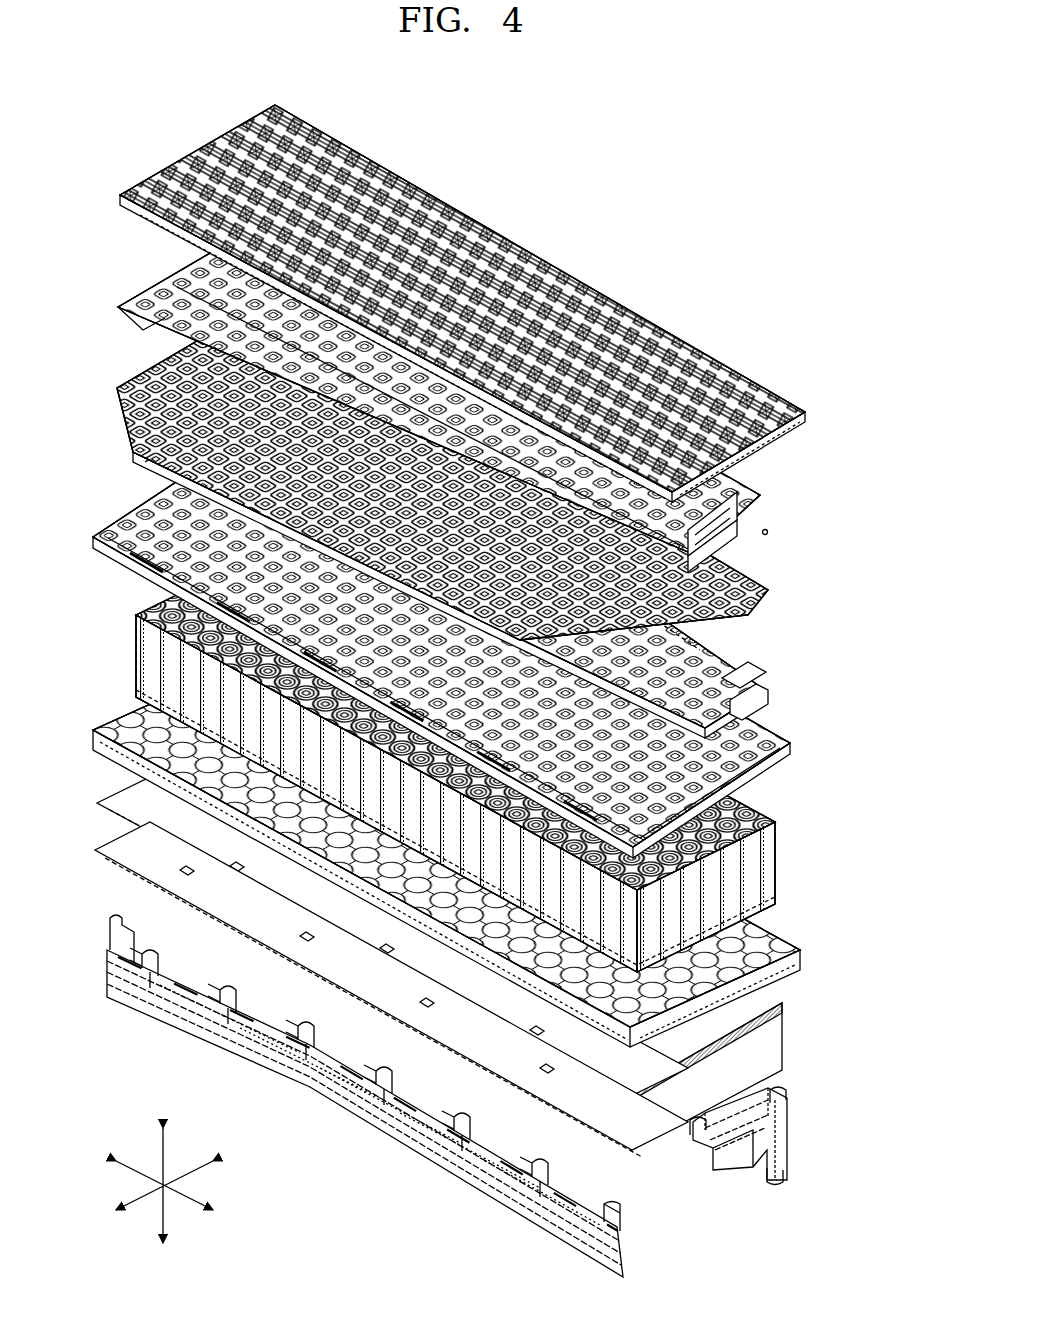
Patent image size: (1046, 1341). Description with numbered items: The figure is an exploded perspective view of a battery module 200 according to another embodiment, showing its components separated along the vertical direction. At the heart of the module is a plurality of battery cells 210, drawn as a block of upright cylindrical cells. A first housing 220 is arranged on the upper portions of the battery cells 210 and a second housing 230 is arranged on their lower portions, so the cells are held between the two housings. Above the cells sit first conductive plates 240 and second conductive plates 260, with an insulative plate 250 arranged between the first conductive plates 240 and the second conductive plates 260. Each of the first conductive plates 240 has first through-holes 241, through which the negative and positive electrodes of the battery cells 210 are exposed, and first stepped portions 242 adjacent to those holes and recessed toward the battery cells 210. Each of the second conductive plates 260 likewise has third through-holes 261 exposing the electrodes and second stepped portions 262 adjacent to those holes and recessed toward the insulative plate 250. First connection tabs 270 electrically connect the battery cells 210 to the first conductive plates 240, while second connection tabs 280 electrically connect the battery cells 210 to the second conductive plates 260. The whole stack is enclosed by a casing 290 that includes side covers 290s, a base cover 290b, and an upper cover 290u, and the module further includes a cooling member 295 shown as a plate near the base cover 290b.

The battery module 200 is at (632, 158).
The battery cells 210 is at (778, 850).
The first housing 220 is at (783, 750).
The second housing 230 is at (774, 956).
The first conductive plates 240 is at (481, 549).
The first through-holes 241 is at (747, 684).
The first stepped portions 242 is at (736, 666).
The insulative plate 250 is at (760, 600).
The second conductive plates 260 is at (767, 533).
The third through-holes 261 is at (740, 527).
The second stepped portions 262 is at (738, 543).
The first connection tabs 270 is at (721, 652).
The second connection tabs 280 is at (474, 393).
The casing 290 is at (812, 326).
The upper cover 290u is at (795, 413).
The base cover 290b is at (155, 880).
The side covers 290s is at (625, 1236).
The cooling member 295 is at (130, 810).